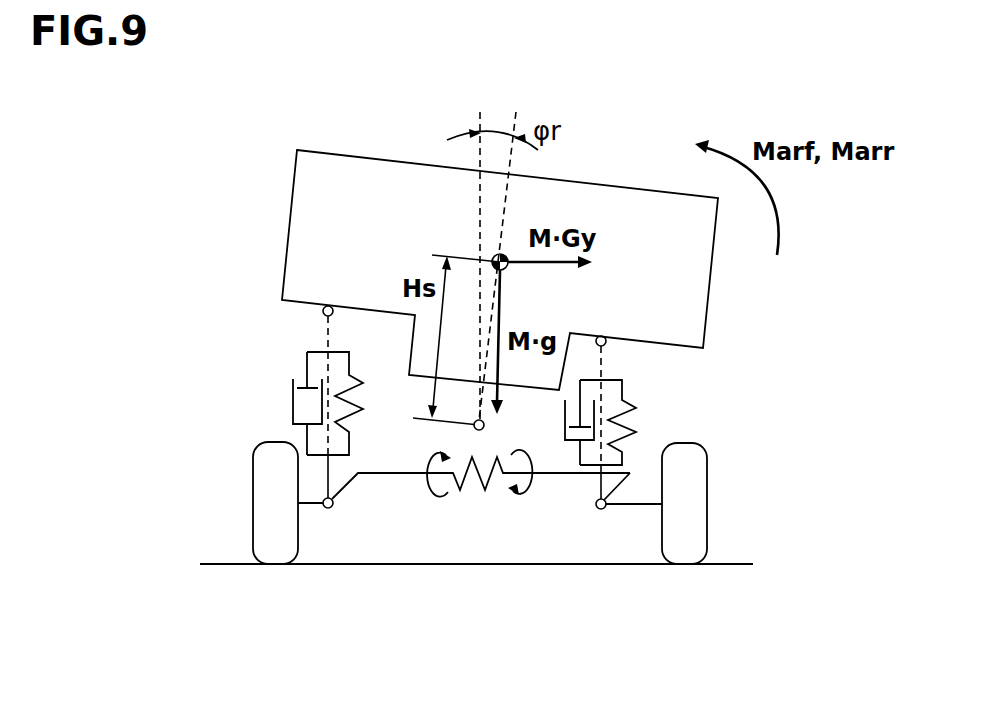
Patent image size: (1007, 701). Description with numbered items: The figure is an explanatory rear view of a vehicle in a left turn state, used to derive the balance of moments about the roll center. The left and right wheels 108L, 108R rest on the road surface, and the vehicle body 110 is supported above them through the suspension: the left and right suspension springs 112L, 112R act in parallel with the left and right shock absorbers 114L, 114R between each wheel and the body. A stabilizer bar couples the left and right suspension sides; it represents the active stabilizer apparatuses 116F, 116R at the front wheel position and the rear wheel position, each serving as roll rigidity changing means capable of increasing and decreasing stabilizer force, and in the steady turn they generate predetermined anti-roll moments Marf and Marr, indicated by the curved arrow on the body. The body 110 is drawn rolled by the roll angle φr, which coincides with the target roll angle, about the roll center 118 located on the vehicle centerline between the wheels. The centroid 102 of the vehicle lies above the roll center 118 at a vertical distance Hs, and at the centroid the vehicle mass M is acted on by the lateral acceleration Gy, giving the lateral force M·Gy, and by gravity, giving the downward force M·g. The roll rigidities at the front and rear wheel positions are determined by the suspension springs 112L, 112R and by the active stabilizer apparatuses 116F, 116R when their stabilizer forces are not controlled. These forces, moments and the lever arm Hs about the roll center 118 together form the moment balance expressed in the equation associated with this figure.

The centroid 102 is at (494, 251).
The left wheel 108L is at (275, 550).
The right wheel 108R is at (686, 553).
The vehicle body 110 is at (290, 222).
The left suspension spring 112L is at (348, 382).
The right suspension spring 112R is at (628, 410).
The left shock absorber 114L is at (303, 407).
The right shock absorber 114R is at (594, 445).
The active stabilizer apparatus at the front wheel position 116F is at (520, 534).
The active stabilizer apparatus at the rear wheel position 116R is at (478, 520).
The roll center 118 is at (485, 423).